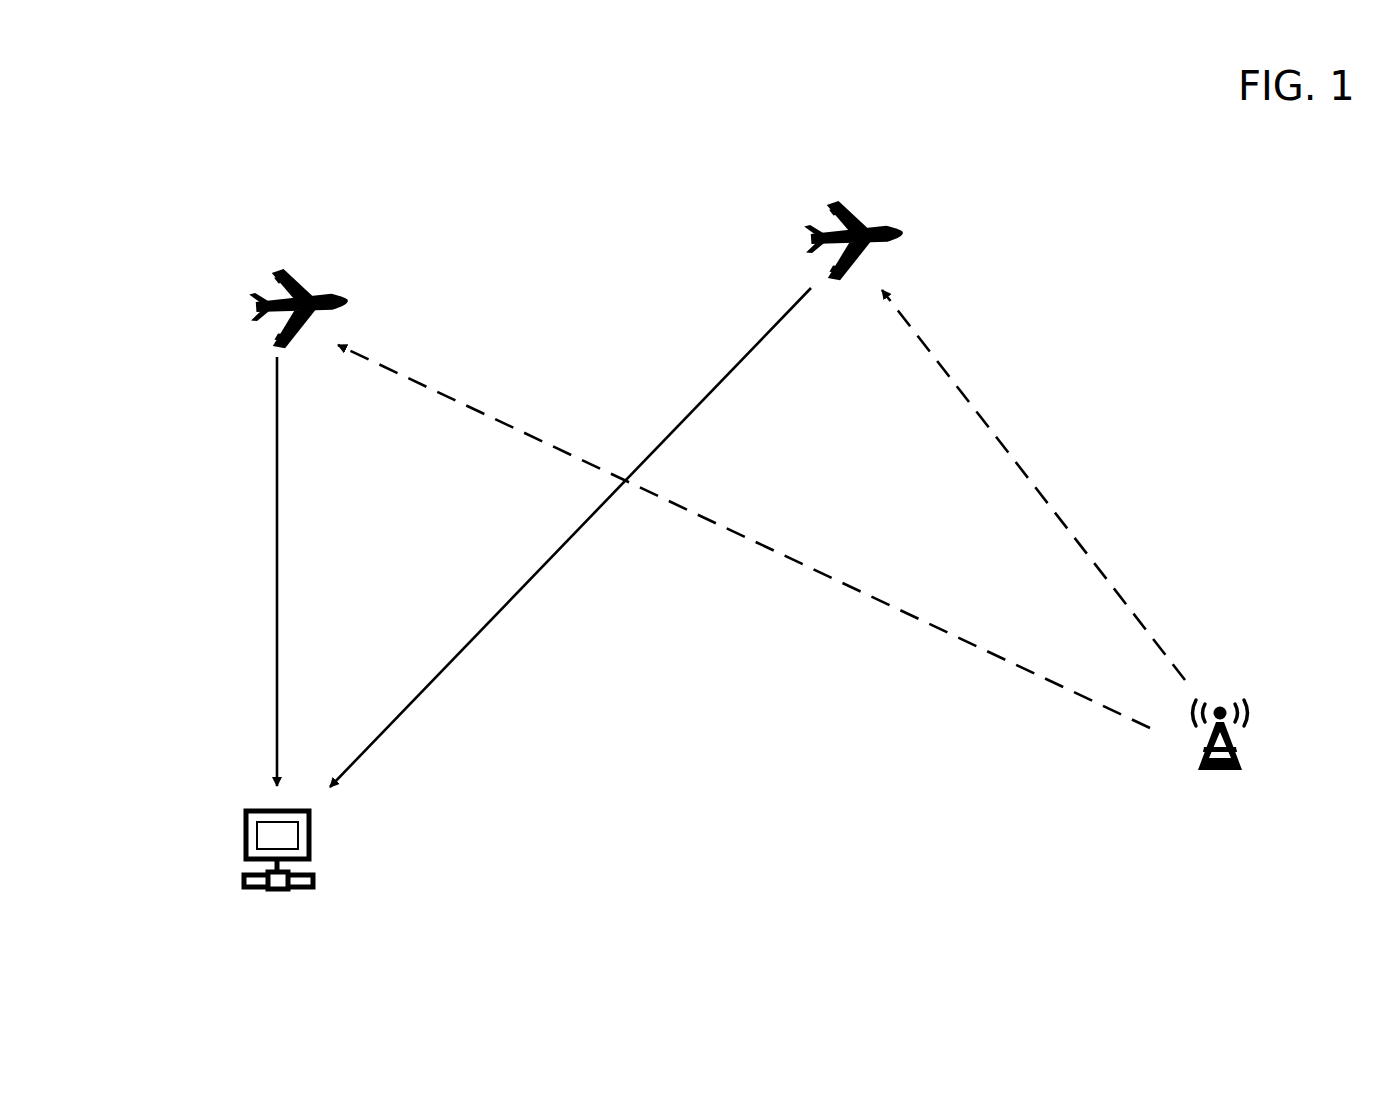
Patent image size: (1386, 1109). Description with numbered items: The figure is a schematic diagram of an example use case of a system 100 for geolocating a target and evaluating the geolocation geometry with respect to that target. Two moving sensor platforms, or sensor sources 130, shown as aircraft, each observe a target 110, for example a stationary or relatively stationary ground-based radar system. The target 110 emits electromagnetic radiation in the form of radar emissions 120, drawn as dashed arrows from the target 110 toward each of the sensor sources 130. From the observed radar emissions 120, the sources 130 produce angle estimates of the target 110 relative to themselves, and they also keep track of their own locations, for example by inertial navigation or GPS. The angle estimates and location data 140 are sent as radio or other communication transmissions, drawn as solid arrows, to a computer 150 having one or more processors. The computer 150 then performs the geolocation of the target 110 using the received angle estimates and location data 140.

The system 100 is at (180, 108).
The target 110 is at (1203, 752).
The radar emissions 120 is at (753, 540).
The sensor sources 130 is at (312, 292).
The transmissions 140 is at (277, 608).
The computer 150 is at (247, 856).